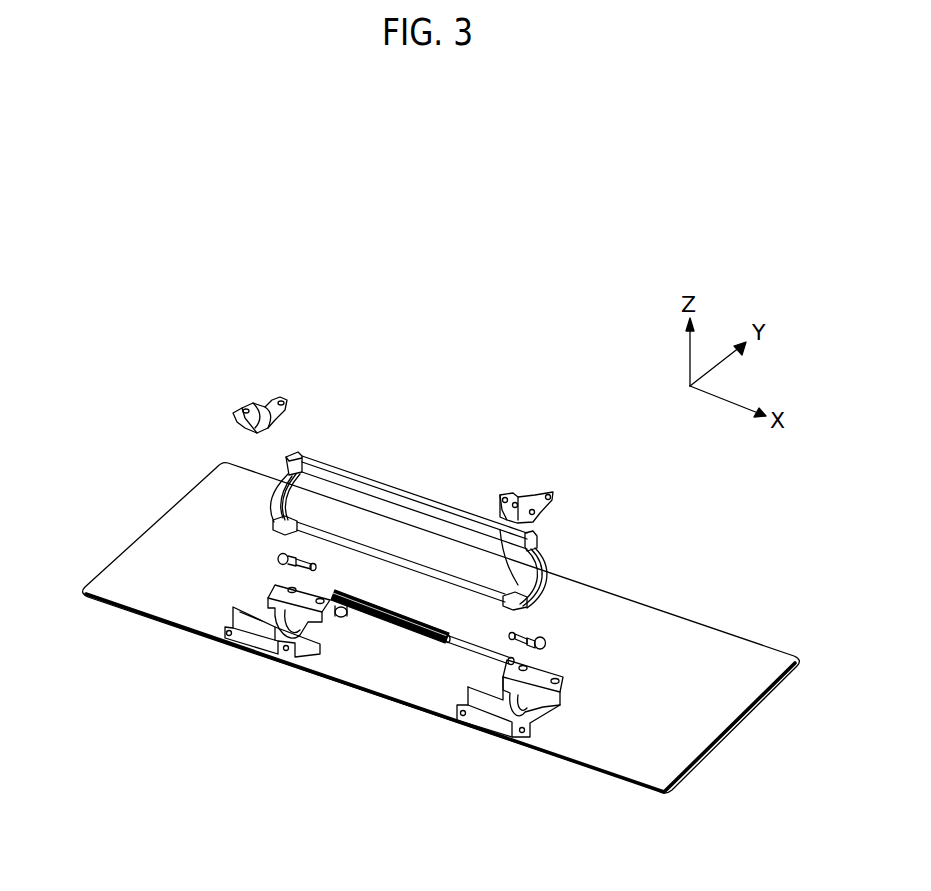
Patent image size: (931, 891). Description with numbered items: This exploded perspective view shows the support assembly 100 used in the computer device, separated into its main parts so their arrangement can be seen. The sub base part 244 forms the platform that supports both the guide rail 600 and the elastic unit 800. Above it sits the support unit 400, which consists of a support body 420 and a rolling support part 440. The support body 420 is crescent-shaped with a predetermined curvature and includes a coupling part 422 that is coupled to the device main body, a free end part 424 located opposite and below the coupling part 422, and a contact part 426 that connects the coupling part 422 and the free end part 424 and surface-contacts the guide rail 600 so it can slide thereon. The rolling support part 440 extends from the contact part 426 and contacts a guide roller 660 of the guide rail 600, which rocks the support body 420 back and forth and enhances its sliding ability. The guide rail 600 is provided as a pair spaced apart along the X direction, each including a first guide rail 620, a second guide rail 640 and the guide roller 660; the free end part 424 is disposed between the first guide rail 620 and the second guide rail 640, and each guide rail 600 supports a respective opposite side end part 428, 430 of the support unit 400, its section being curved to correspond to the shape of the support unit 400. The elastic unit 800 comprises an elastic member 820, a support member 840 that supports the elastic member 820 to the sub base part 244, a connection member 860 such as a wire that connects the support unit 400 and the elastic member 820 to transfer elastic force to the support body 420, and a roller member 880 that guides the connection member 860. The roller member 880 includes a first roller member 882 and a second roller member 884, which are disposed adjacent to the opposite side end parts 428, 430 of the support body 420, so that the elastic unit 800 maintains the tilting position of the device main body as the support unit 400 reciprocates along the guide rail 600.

The support assembly 100 is at (365, 297).
The sub base part 244 is at (718, 737).
The support unit 400 is at (582, 443).
The support body 420 is at (437, 433).
The coupling part 422 is at (375, 482).
The free end part 424 is at (382, 557).
The contact part 426 is at (309, 455).
The opposite side end part 428 is at (313, 506).
The opposite side end part 430 is at (505, 495).
The rolling support part 440 is at (543, 575).
The guide rail 600 is at (150, 423).
The first guide rail 620 is at (233, 612).
The second guide rail 640 is at (237, 417).
The guide roller 660 is at (277, 557).
The elastic unit 800 is at (427, 781).
The elastic member 820 is at (410, 636).
The support member 840 is at (300, 650).
The connection member 860 is at (443, 641).
The roller member 880 is at (507, 666).
The first roller member 882 is at (467, 664).
The second roller member 884 is at (340, 618).